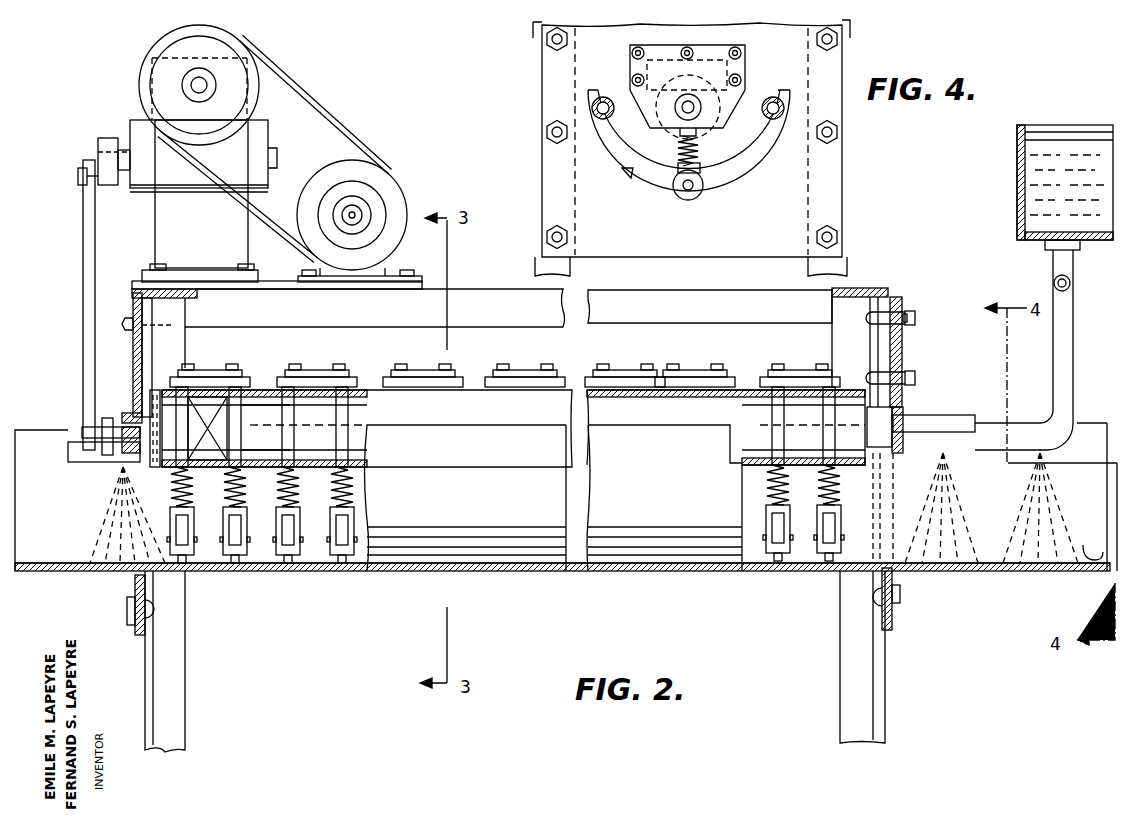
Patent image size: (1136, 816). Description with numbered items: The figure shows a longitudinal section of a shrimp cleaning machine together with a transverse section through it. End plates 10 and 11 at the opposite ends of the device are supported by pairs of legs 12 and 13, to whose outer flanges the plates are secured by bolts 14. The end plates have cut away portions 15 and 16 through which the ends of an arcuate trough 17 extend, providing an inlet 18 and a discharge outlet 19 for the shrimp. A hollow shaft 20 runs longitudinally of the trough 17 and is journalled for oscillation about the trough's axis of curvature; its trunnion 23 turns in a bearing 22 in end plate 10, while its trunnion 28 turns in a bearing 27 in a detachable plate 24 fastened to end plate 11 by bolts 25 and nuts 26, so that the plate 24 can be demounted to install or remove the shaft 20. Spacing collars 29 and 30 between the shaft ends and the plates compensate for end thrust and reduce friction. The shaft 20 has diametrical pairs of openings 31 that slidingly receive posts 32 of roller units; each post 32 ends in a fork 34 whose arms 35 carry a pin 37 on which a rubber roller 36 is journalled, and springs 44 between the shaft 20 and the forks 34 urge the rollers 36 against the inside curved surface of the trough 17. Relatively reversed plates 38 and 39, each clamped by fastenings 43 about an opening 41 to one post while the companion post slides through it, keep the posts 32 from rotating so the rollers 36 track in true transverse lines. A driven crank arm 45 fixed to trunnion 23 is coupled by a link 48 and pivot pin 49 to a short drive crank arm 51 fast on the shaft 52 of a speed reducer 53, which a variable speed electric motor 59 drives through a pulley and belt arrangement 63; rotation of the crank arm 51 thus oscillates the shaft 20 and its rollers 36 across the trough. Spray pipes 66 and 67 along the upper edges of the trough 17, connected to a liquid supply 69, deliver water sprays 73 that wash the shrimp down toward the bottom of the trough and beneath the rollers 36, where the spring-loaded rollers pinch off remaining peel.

In FIG. 2, the end plate 10 is at (133, 350).
In FIG. 2, the end plate 11 is at (892, 622).
In FIG. 4, the end plate 11 is at (783, 203).
In FIG. 2, the legs 12 is at (145, 668).
In FIG. 2, the legs 13 is at (875, 672).
In FIG. 4, the legs 13 is at (570, 266).
In FIG. 2, the bolts 14 is at (127, 612).
In FIG. 4, the bolts 14 is at (548, 40).
In FIG. 2, the cut away portion 15 is at (135, 580).
In FIG. 2, the cut away portion 16 is at (892, 575).
In FIG. 4, the cut away portion 16 is at (757, 169).
In FIG. 2, the trough 17 is at (643, 497).
In FIG. 4, the trough 17 is at (627, 182).
In FIG. 2, the inlet 18 is at (44, 445).
In FIG. 2, the discharge outlet 19 is at (1098, 560).
In FIG. 2, the shaft 20 is at (368, 420).
In FIG. 4, the shaft 20 is at (700, 133).
In FIG. 2, the bearing 22 is at (128, 413).
In FIG. 2, the trunnion 23 is at (122, 445).
In FIG. 2, the detachable plate 24 is at (902, 354).
In FIG. 4, the detachable plate 24 is at (718, 50).
In FIG. 2, the bolts 25 is at (915, 316).
In FIG. 4, the bolts 25 is at (632, 51).
In FIG. 2, the nuts 26 is at (905, 312).
In FIG. 4, the nuts 26 is at (741, 80).
In FIG. 2, the bearing 27 is at (908, 392).
In FIG. 4, the bearing 27 is at (695, 102).
In FIG. 2, the trunnion 28 is at (960, 423).
In FIG. 4, the trunnion 28 is at (676, 112).
In FIG. 2, the spacing collar 29 is at (900, 437).
In FIG. 2, the spacing collar 30 is at (148, 467).
In FIG. 2, the openings 31 is at (207, 428).
In FIG. 2, the post 32 is at (242, 430).
In FIG. 2, the fork 34 is at (285, 497).
In FIG. 2, the arms 35 is at (355, 522).
In FIG. 2, the rubber roller 36 is at (340, 560).
In FIG. 4, the rubber roller 36 is at (704, 183).
In FIG. 2, the pin 37 is at (252, 563).
In FIG. 2, the plate 38 is at (200, 375).
In FIG. 2, the plate 39 is at (232, 380).
In FIG. 2, the opening 41 is at (82, 430).
In FIG. 2, the fastenings 43 is at (575, 375).
In FIG. 2, the spring 44 is at (222, 488).
In FIG. 4, the spring 44 is at (700, 153).
In FIG. 2, the driven crank arm 45 is at (100, 462).
In FIG. 2, the link 48 is at (83, 266).
In FIG. 2, the pivot pin 49 is at (78, 172).
In FIG. 2, the drive crank arm 51 is at (107, 185).
In FIG. 2, the shaft 52 is at (124, 157).
In FIG. 2, the speed reducer 53 is at (222, 216).
In FIG. 2, the variable speed electric motor 59 is at (377, 163).
In FIG. 2, the pulley and belt arrangement 63 is at (311, 112).
In FIG. 4, the spray pipe 66 is at (763, 109).
In FIG. 4, the spray pipe 67 is at (603, 98).
In FIG. 2, the liquid supply 69 is at (1017, 195).
In FIG. 2, the water sprays 73 is at (95, 524).